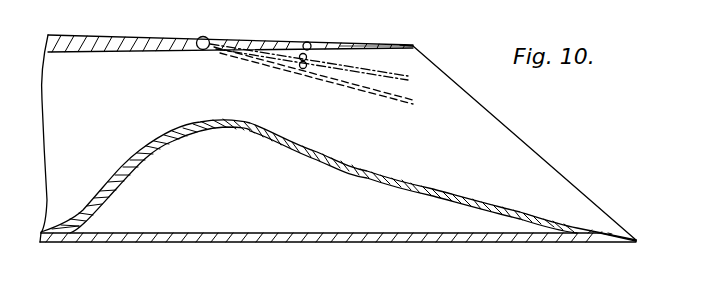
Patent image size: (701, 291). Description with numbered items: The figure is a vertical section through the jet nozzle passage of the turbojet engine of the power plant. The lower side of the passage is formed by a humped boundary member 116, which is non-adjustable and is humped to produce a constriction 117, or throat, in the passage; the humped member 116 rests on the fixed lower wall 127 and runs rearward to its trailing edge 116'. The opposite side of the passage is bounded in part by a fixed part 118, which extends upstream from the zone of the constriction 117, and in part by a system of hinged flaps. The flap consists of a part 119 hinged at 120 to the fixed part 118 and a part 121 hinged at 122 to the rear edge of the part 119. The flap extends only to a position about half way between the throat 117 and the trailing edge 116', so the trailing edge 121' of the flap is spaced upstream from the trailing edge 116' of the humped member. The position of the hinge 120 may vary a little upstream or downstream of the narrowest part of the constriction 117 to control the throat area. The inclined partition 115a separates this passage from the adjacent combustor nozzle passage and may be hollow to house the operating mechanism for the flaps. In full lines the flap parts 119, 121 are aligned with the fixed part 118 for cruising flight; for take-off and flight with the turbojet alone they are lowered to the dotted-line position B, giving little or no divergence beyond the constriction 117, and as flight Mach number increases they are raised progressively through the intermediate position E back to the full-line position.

The fixed part 118 is at (130, 41).
The hinge 120 is at (207, 40).
The flap part 119 is at (305, 43).
The hinge 122 is at (313, 44).
The flap part 121 is at (376, 25).
The trailing edge of the flap 121' is at (426, 24).
The intermediate position E is at (407, 78).
The lowered flap position B is at (407, 100).
The constriction 117 is at (233, 99).
The partition 115a is at (503, 130).
The humped boundary member 116 is at (338, 179).
The trailing edge of the humped member 116' is at (616, 258).
The fixed lower wall 127 is at (212, 236).